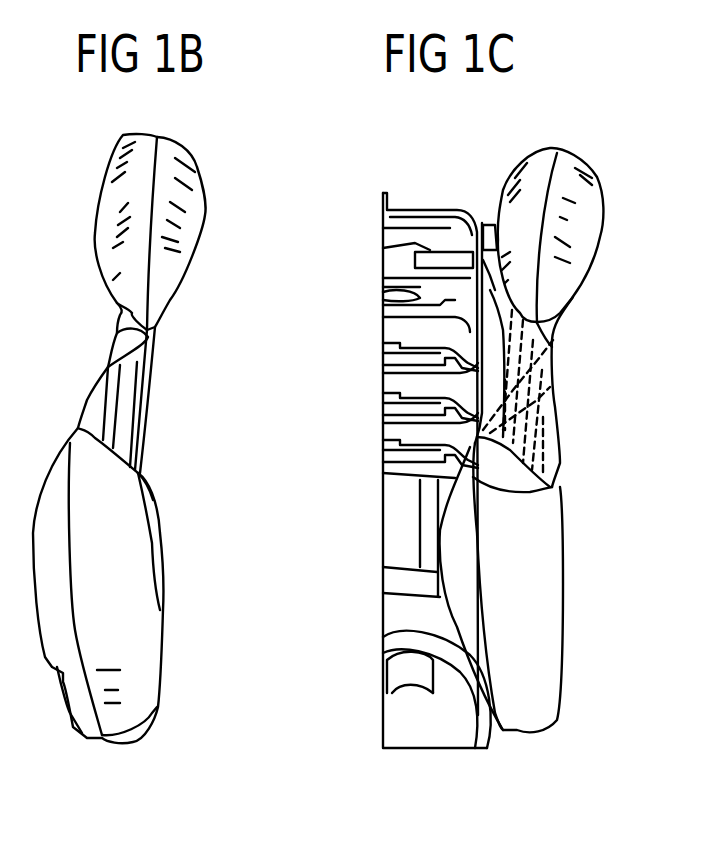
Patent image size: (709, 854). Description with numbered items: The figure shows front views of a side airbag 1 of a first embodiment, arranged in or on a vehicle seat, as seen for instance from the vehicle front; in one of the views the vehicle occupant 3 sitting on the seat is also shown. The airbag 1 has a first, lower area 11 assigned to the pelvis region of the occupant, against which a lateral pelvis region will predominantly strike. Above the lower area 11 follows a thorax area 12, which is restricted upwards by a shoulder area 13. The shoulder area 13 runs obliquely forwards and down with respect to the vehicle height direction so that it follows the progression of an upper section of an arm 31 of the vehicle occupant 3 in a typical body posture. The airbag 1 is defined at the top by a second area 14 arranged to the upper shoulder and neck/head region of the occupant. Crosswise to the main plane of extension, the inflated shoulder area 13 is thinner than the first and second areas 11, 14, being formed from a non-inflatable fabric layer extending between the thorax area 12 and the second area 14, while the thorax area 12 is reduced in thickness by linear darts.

In FIG. 1B, the airbag 1 is at (213, 162).
In FIG. 1C, the airbag 1 is at (615, 182).
In FIG. 1C, the vehicle occupant 3 is at (417, 213).
In FIG. 1B, the first, lower area 11 is at (143, 625).
In FIG. 1C, the first, lower area 11 is at (543, 677).
In FIG. 1B, the thorax area 12 is at (138, 412).
In FIG. 1C, the thorax area 12 is at (533, 435).
In FIG. 1B, the shoulder area 13 is at (117, 333).
In FIG. 1C, the shoulder area 13 is at (540, 362).
In FIG. 1B, the second area 14 is at (192, 232).
In FIG. 1C, the second area 14 is at (583, 242).
In FIG. 1C, the upper section of an arm 31 is at (525, 485).